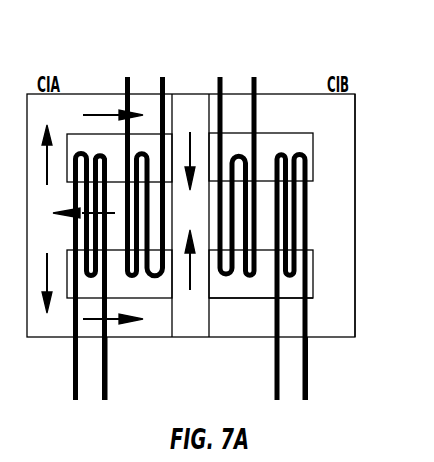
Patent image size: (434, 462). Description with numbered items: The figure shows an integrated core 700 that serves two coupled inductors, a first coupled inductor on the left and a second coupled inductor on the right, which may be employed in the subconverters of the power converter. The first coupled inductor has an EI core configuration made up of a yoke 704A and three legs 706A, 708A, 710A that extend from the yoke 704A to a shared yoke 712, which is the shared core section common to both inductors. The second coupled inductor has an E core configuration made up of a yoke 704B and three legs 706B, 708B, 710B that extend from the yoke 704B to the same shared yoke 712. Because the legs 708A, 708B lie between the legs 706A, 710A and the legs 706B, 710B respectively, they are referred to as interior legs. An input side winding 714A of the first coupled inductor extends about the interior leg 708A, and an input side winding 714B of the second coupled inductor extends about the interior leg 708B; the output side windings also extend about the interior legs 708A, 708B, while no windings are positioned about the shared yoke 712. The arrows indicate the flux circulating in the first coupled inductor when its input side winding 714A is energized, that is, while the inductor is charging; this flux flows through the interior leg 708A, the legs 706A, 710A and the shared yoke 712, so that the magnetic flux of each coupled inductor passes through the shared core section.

The integrated core 700 is at (337, 50).
The yoke 704A is at (38, 328).
The yoke 704B is at (347, 162).
The leg 706A is at (90, 107).
The leg 706B is at (299, 108).
The interior leg 708A is at (78, 188).
The interior leg 708B is at (297, 212).
The leg 710A is at (85, 310).
The leg 710B is at (254, 324).
The shared yoke 712 is at (192, 328).
The input side winding 714A is at (110, 368).
The input side winding 714B is at (310, 378).